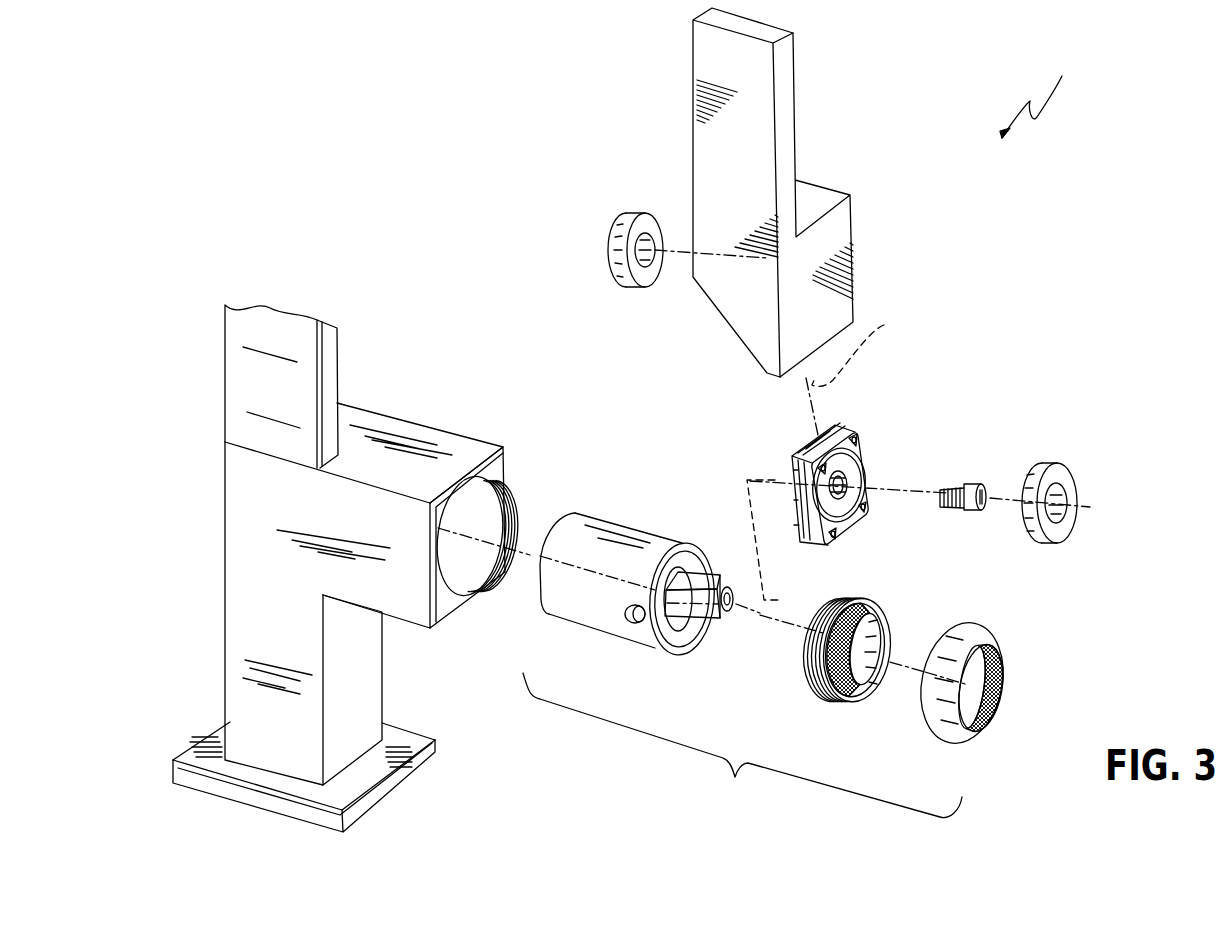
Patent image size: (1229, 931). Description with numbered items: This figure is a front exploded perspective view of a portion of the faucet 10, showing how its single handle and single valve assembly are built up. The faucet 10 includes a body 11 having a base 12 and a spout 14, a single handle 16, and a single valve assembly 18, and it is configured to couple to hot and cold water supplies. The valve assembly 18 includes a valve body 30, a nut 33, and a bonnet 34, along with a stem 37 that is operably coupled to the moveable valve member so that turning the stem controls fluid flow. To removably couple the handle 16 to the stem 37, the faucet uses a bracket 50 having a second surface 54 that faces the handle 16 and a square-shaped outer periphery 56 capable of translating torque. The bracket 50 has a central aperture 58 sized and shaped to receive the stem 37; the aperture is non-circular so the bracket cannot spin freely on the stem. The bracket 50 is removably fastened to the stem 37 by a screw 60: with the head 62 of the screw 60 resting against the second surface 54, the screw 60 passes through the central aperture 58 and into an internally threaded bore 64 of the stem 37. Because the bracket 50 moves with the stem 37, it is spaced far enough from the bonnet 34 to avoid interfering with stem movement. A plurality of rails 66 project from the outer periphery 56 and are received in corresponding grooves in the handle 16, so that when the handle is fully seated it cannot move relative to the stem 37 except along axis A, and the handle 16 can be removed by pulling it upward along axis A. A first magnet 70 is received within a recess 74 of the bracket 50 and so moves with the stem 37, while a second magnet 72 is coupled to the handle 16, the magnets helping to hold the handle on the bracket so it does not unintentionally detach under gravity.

The faucet 10 is at (1040, 89).
The body 11 is at (234, 641).
The base 12 is at (233, 496).
The spout 14 is at (330, 366).
The handle 16 is at (783, 122).
The valve assembly 18 is at (742, 746).
The valve body 30 is at (591, 512).
The nut 33 is at (845, 711).
The bonnet 34 is at (1003, 681).
The stem 37 is at (699, 572).
The bracket 50 is at (841, 478).
The second surface 54 is at (847, 528).
The outer periphery 56 is at (845, 428).
The central aperture 58 is at (848, 485).
The screw 60 is at (1009, 500).
The head 62 is at (988, 492).
The internally threaded bore 64 is at (737, 611).
The rails 66 is at (805, 444).
The first magnet 70 is at (1070, 518).
The second magnet 72 is at (630, 212).
The recess 74 is at (855, 516).
The axis A is at (859, 371).